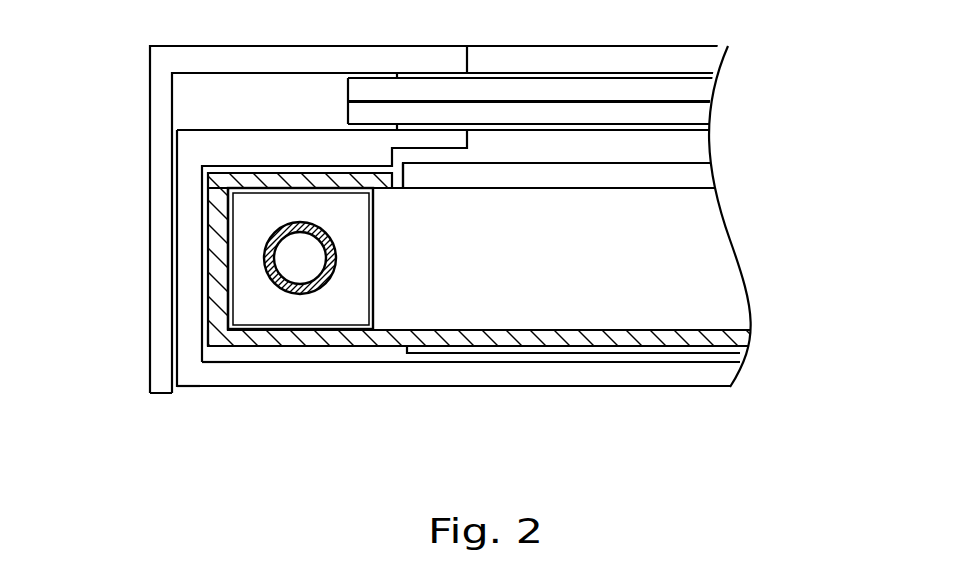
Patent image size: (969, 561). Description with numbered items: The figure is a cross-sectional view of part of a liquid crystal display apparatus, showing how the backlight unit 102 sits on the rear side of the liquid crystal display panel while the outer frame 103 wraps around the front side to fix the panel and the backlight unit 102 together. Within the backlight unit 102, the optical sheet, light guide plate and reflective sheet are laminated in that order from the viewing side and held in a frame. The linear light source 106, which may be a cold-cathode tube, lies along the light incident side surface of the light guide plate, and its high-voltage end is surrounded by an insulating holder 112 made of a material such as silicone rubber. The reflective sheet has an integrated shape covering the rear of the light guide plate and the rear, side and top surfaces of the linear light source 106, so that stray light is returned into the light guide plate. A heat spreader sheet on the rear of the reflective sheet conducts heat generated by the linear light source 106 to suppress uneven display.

The backlight unit 102 is at (782, 303).
The outer frame 103 is at (150, 101).
The linear light source 106 is at (298, 272).
The holder 112 is at (347, 317).